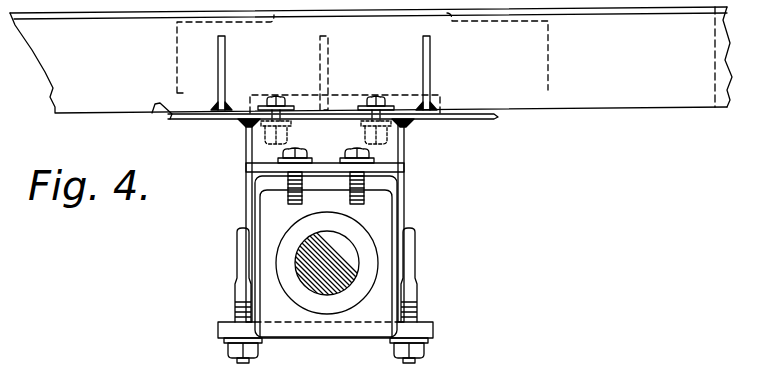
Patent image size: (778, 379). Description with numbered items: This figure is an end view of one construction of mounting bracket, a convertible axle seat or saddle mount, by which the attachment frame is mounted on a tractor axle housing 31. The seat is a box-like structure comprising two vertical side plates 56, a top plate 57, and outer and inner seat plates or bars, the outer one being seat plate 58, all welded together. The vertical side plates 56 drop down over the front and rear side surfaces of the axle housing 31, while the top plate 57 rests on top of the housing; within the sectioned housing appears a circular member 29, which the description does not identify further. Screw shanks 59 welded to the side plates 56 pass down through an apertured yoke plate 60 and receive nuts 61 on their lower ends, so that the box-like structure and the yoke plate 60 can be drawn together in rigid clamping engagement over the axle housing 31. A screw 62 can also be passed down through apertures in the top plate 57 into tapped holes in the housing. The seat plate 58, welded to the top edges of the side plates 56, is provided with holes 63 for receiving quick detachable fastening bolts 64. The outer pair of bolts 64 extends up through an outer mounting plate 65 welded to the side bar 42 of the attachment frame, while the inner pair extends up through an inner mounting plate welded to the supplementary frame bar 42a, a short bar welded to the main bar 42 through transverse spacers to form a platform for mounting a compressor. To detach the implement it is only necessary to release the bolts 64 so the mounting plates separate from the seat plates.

The side bar 42 is at (628, 92).
The supplementary frame bar 42a is at (715, 70).
The outer mounting plate 65 is at (186, 118).
The outer seat plate 58 is at (240, 123).
The quick detachable fastening bolts 64 is at (279, 96).
The holes 63 is at (358, 124).
The vertical side plates 56 is at (250, 200).
The top plate 57 is at (320, 171).
The screw 62 is at (281, 152).
The axle housing 31 is at (385, 266).
The pipe 29 is at (337, 258).
The yoke plate 60 is at (425, 328).
The screw shanks 59 is at (238, 292).
The nuts 61 is at (228, 347).